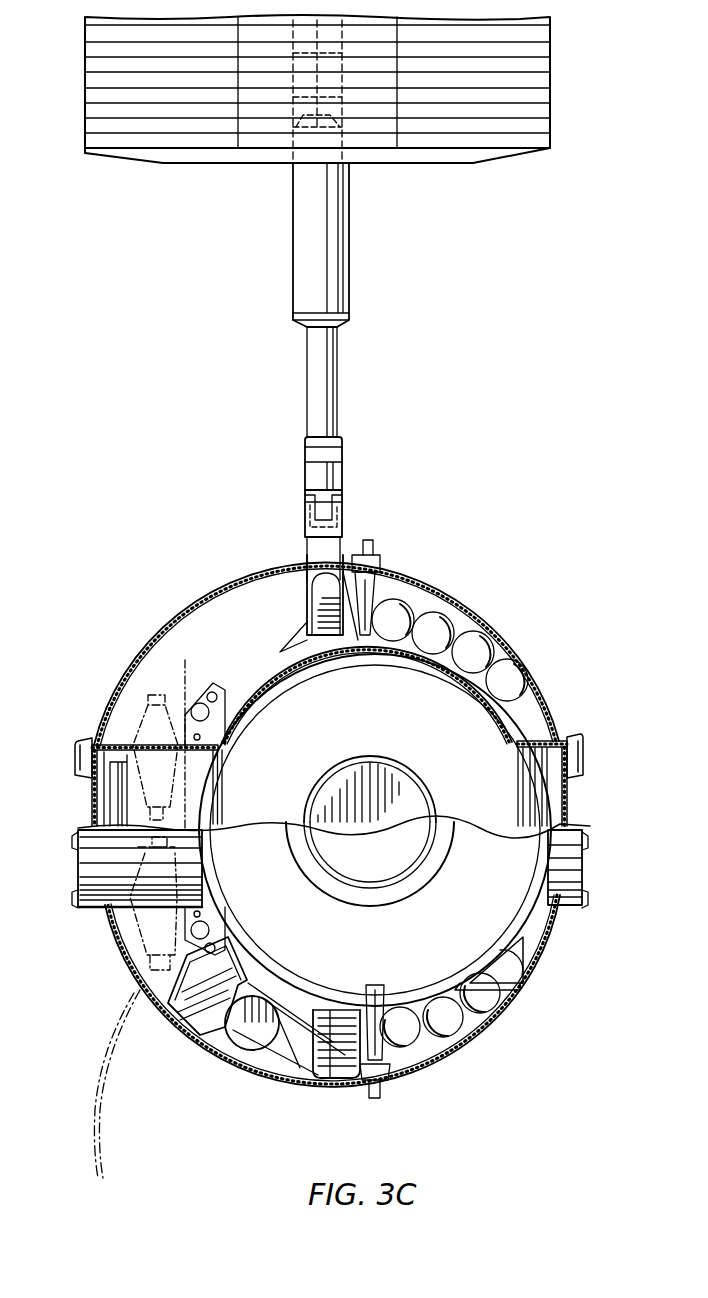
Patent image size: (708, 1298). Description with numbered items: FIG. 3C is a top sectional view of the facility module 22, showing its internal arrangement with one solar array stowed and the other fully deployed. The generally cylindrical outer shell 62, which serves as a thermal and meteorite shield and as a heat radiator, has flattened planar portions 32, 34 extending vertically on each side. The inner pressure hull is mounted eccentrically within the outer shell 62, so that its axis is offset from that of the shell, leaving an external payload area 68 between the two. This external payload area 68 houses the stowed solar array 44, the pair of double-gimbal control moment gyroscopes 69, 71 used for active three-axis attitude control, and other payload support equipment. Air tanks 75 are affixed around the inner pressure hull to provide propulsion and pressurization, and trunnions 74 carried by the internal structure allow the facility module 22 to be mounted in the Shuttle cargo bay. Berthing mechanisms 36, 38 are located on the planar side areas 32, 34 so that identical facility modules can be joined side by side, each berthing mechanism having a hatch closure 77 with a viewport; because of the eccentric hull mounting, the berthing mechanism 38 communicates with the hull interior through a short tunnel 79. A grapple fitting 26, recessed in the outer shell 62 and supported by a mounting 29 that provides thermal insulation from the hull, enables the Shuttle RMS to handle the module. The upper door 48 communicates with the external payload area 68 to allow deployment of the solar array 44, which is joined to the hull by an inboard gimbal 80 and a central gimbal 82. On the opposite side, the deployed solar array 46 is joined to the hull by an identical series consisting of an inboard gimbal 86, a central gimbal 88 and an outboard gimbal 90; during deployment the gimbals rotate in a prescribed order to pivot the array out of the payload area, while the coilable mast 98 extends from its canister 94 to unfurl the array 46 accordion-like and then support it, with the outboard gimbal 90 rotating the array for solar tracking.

The solar array 46 is at (566, 104).
The coilable mast 98 is at (343, 87).
The canister 94 is at (337, 282).
The outboard gimbal 90 is at (316, 450).
The central gimbal 88 is at (312, 530).
The inboard gimbal 86 is at (312, 598).
The trunnion 74 is at (370, 545).
The facility module 22 is at (475, 559).
The external payload area 68 is at (213, 610).
The grapple fitting 26 is at (507, 1008).
The outer shell 62 is at (517, 660).
The air tank 75 is at (478, 650).
The planar portion 34 is at (93, 746).
The planar portion 32 is at (566, 735).
The hatch closure 77 is at (110, 785).
The berthing mechanism 38 is at (78, 855).
The berthing mechanism 36 is at (582, 857).
The tunnel 79 is at (132, 740).
The control moment gyroscope 71 is at (186, 743).
The control moment gyroscope 69 is at (125, 940).
The mounting 29 is at (517, 968).
The solar array 44 is at (207, 1028).
The central gimbal 82 is at (290, 1050).
The inboard gimbal 80 is at (330, 1063).
The upper door 48 is at (118, 1097).